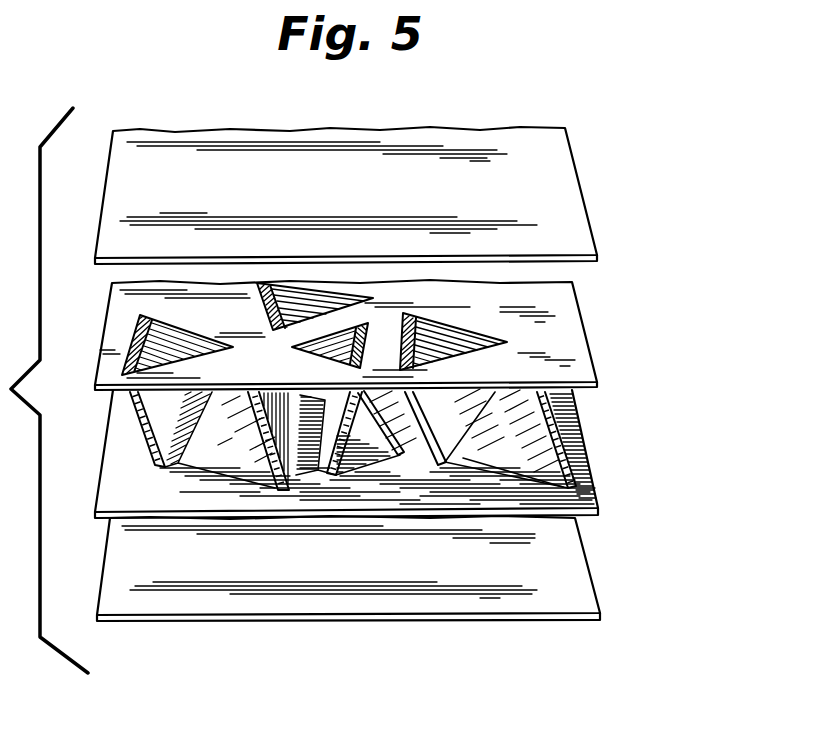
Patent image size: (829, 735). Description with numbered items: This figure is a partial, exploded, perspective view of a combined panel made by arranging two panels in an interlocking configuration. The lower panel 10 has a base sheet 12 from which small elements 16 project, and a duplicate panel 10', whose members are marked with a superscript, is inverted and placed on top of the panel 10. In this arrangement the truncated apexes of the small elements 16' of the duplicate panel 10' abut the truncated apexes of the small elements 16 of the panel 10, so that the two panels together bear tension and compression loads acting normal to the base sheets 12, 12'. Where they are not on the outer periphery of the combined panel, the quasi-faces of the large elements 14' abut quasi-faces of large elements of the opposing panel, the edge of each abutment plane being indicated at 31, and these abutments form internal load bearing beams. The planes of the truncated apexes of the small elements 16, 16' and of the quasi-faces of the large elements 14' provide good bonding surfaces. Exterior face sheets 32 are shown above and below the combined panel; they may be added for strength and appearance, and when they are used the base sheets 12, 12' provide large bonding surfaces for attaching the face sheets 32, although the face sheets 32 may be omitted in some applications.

The panel 10 is at (642, 471).
The duplicate panel 10' is at (641, 343).
The base sheet 12 is at (324, 454).
The base sheet 12' is at (322, 335).
The large elements 14' is at (314, 346).
The small elements 16 is at (366, 445).
The small elements 16' is at (296, 371).
The edge of the abutment plane 31 is at (233, 372).
The exterior face sheets 32 is at (263, 142).